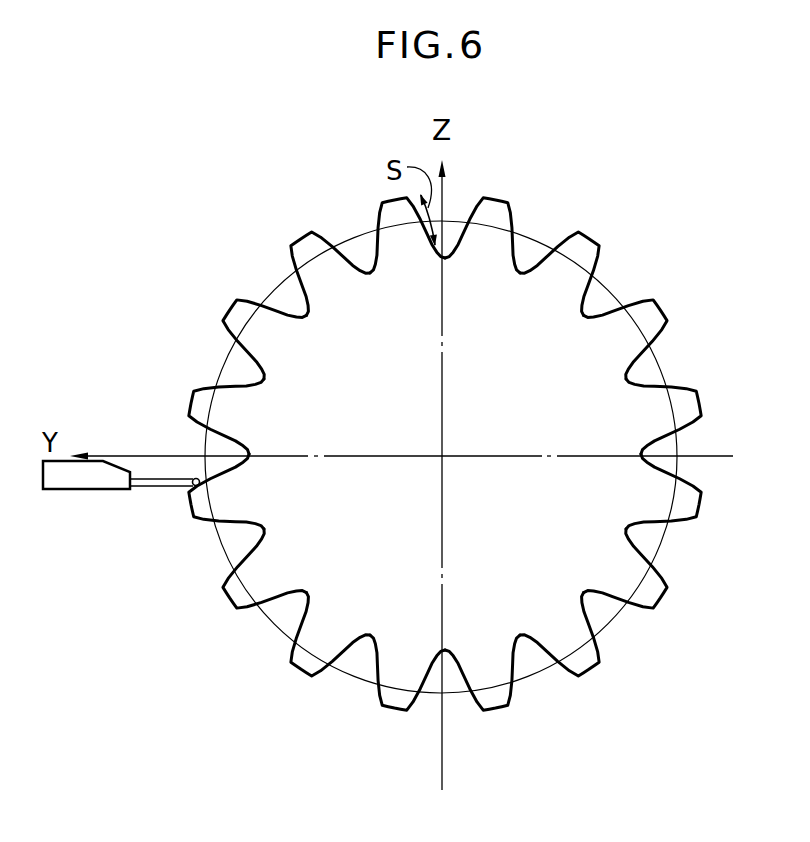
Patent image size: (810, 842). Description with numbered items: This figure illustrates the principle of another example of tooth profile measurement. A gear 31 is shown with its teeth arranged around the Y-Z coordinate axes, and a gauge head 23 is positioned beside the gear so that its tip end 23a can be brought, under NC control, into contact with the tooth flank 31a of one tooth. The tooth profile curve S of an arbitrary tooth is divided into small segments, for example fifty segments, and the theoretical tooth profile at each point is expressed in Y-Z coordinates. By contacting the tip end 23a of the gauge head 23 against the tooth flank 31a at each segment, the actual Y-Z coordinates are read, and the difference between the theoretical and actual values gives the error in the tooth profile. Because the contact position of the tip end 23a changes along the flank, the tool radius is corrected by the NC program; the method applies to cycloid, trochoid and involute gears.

The gauge head 23 is at (121, 484).
The tip end 23a is at (193, 481).
The gear 31 is at (409, 454).
The tooth flank 31a is at (212, 471).